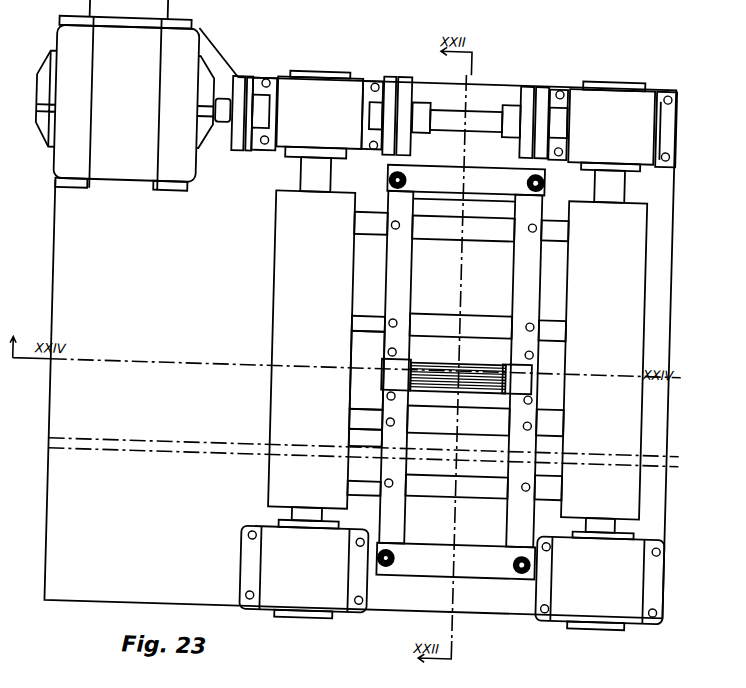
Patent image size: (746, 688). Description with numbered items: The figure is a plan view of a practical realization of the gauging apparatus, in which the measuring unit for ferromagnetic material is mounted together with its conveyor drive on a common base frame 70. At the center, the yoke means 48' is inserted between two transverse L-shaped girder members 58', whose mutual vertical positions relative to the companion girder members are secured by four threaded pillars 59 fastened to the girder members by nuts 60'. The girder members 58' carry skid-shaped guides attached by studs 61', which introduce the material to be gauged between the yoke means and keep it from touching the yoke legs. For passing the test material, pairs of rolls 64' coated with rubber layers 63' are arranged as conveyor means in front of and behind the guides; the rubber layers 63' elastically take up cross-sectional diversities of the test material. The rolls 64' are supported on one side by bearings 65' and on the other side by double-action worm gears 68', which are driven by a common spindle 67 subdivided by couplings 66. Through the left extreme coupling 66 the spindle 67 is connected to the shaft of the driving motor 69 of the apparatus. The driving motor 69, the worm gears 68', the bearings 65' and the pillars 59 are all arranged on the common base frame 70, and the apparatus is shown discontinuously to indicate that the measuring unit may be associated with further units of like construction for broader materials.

The driving motor 69 is at (175, 32).
The coupling 66 is at (249, 69).
The double-action worm gear 68' is at (466, 107).
The common spindle 67 is at (480, 106).
The pair of rolls 64' is at (462, 181).
The rubber layer 63' is at (446, 355).
The nut 60' is at (393, 370).
The threaded pillar 59 is at (410, 170).
The stud 61' is at (460, 368).
The transverse L-shaped girder member 58' is at (460, 372).
The yoke means 48' is at (471, 371).
The bearing 65' is at (452, 578).
The common base frame 70 is at (101, 593).